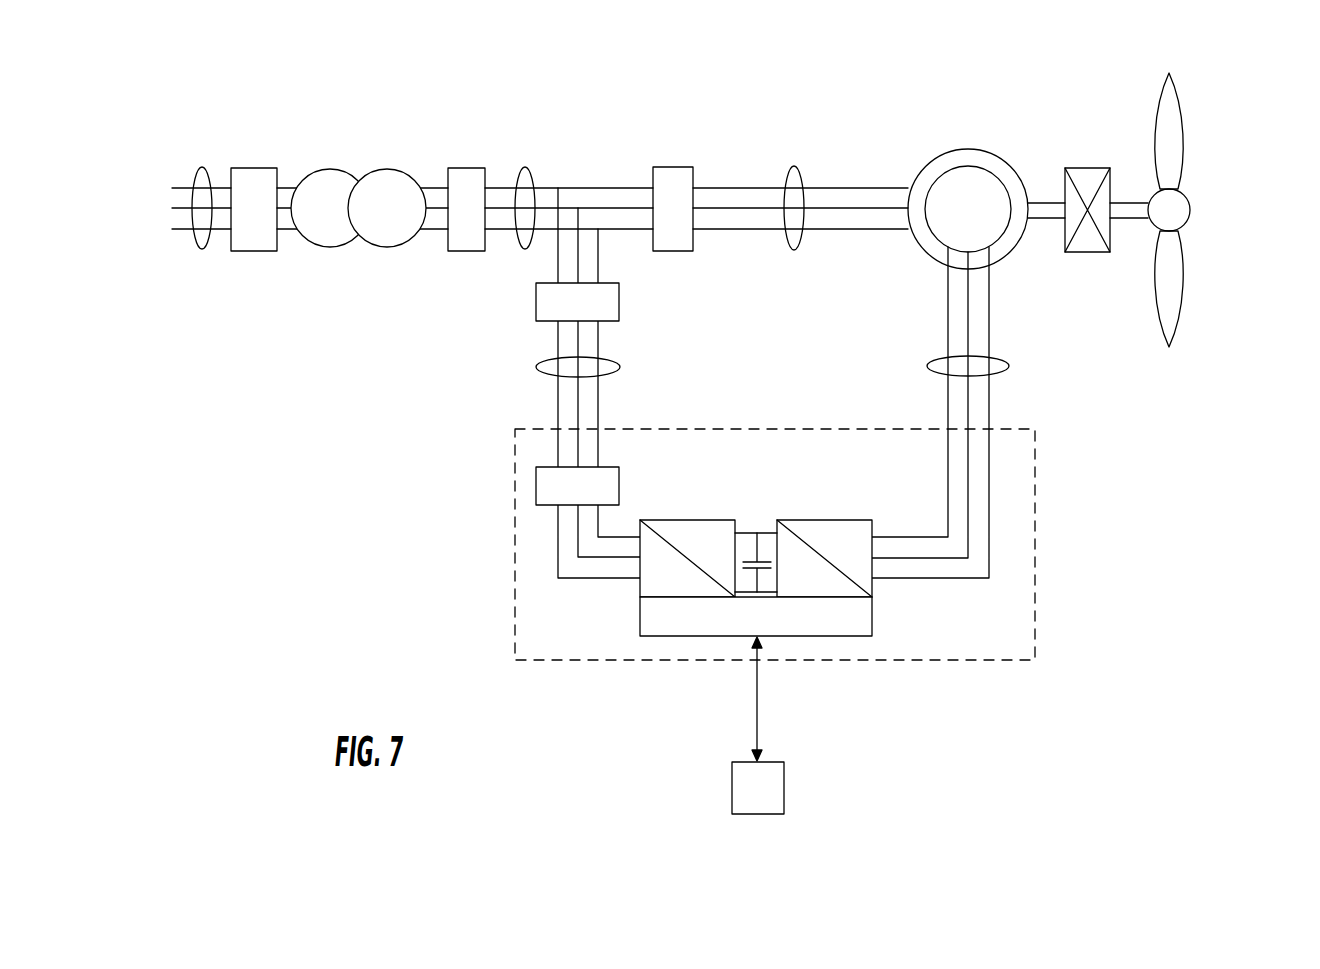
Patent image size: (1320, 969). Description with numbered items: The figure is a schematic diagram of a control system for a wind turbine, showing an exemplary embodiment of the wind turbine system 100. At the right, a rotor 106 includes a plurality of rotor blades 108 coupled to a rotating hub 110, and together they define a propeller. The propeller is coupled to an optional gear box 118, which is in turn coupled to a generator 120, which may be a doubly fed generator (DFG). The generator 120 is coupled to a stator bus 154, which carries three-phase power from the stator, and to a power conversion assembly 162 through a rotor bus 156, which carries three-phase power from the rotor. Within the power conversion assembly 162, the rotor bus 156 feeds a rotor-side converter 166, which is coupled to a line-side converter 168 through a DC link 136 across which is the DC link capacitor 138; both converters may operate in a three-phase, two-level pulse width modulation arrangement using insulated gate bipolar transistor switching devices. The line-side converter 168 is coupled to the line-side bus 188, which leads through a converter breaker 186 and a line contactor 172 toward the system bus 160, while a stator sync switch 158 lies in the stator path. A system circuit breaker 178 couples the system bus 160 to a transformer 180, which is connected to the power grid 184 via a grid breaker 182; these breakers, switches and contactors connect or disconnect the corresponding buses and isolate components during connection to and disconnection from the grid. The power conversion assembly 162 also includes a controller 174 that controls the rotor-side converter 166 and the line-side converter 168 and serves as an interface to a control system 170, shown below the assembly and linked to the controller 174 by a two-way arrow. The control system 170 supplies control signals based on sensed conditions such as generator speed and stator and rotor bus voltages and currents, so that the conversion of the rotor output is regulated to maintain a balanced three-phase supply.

The wind turbine system 100 is at (395, 540).
The rotor 106 is at (1219, 89).
The rotor blades 108 is at (1180, 138).
The rotating hub 110 is at (1190, 210).
The gear box 118 is at (1087, 168).
The generator 120 is at (968, 149).
The DC link 136 is at (763, 533).
The DC link capacitor 138 is at (748, 556).
The stator bus 154 is at (795, 166).
The rotor bus 156 is at (1010, 366).
The stator sync switch 158 is at (672, 167).
The system bus 160 is at (528, 167).
The power conversion assembly 162 is at (1035, 547).
The rotor-side converter 166 is at (872, 588).
The line-side converter 168 is at (640, 590).
The control system 170 is at (784, 790).
The line contactor 172 is at (536, 485).
The controller 174 is at (684, 637).
The system circuit breaker 178 is at (470, 168).
The transformer 180 is at (385, 169).
The grid breaker 182 is at (258, 168).
The power grid 184 is at (202, 167).
The converter breaker 186 is at (536, 310).
The line-side bus 188 is at (536, 367).